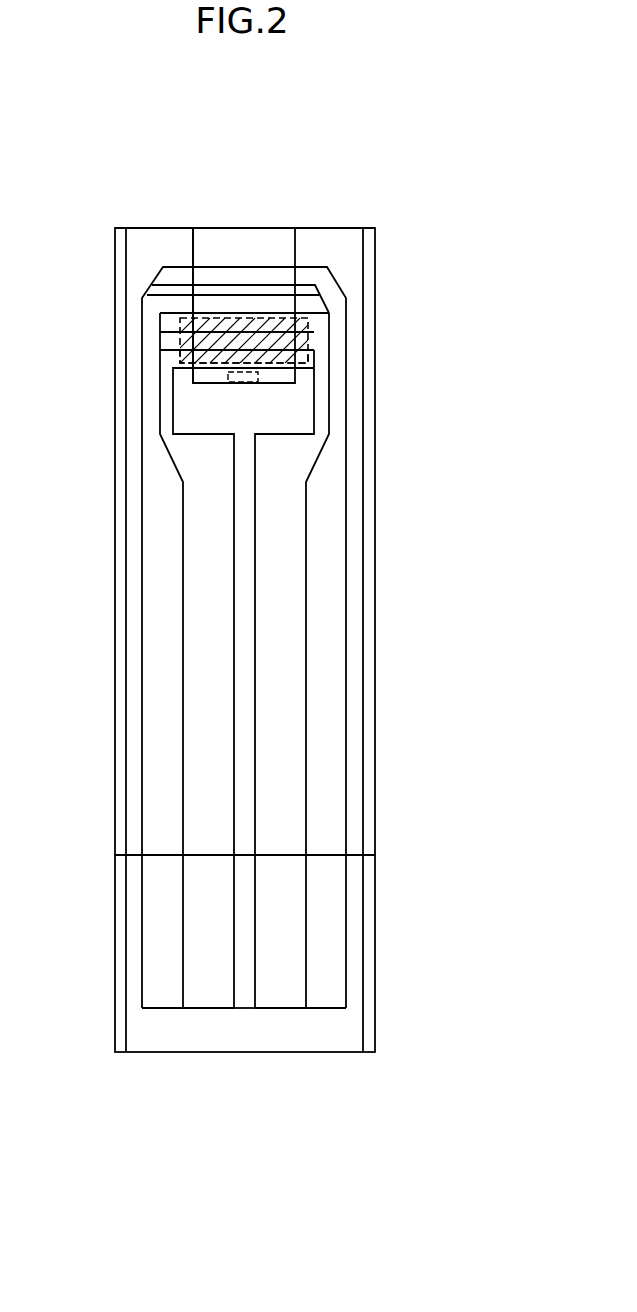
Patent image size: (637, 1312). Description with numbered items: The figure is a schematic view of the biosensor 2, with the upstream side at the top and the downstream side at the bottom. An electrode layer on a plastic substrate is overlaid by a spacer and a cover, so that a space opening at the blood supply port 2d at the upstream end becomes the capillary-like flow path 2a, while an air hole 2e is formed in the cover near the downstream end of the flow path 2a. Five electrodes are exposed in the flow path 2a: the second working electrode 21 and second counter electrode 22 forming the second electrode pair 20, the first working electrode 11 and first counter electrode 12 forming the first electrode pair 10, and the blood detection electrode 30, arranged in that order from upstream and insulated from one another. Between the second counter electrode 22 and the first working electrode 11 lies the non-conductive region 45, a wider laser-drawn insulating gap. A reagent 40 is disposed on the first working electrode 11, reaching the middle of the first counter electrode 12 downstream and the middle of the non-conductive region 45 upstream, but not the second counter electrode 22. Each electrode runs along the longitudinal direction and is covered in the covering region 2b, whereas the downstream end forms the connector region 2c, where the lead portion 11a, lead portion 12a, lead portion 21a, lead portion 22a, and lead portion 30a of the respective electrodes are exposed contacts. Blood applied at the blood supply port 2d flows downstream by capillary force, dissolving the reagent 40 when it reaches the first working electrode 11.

The biosensor 2 is at (410, 186).
The flow path 2a is at (196, 253).
The covering region 2b is at (98, 228).
The connector region 2c is at (98, 860).
The blood supply port 2d is at (290, 224).
The air hole 2e is at (228, 377).
The first electrode pair 10 is at (452, 307).
The first working electrode 11 is at (315, 340).
The first counter electrode 12 is at (316, 360).
The second electrode pair 20 is at (293, 144).
The second working electrode 21 is at (227, 273).
The second counter electrode 22 is at (263, 302).
The blood detection electrode 30 is at (282, 420).
The reagent 40 is at (277, 318).
The non-conductive region 45 is at (322, 322).
The lead portion of the first working electrode 11a is at (293, 940).
The lead portion of the first counter electrode 12a is at (207, 997).
The lead portion of the second working electrode 21a is at (337, 903).
The lead portion of the second counter electrode 22a is at (161, 997).
The lead portion of the blood detection electrode 30a is at (247, 978).